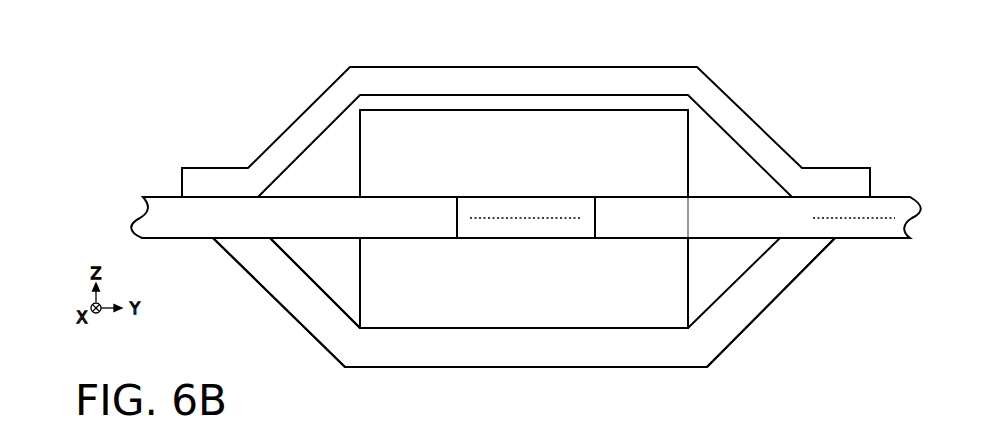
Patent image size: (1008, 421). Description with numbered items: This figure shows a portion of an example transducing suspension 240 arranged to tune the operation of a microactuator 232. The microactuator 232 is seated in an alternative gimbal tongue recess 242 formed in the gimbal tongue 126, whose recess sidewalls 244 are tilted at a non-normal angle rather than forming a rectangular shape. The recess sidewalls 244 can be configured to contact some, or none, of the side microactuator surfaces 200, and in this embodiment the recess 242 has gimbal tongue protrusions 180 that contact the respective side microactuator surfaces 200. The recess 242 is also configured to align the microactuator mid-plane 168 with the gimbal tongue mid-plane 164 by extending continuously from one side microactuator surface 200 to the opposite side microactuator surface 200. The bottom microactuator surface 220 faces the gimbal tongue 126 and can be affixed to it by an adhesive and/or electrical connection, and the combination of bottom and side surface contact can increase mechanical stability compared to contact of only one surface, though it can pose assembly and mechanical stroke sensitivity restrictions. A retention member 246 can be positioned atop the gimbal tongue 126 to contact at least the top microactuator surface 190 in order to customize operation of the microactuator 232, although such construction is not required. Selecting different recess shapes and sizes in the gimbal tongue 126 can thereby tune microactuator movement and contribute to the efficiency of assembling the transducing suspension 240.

The transducing suspension 240 is at (783, 41).
The retention member 246 is at (501, 90).
The microactuator 232 is at (374, 138).
The top microactuator surface 190 is at (625, 114).
The gimbal tongue 126 is at (143, 197).
The gimbal tongue protrusions 180 is at (409, 228).
The microactuator mid-plane 168 is at (522, 218).
The gimbal tongue mid-plane 164 is at (848, 218).
The side microactuator surfaces 200 is at (368, 260).
The bottom microactuator surface 220 is at (518, 320).
The recess sidewalls 244 is at (317, 285).
The gimbal tongue recess 242 is at (338, 318).